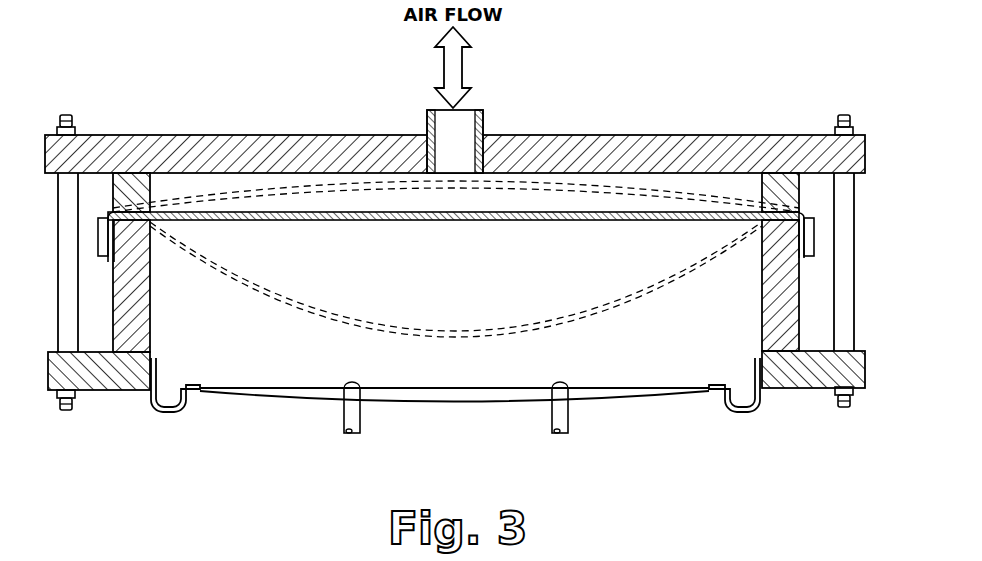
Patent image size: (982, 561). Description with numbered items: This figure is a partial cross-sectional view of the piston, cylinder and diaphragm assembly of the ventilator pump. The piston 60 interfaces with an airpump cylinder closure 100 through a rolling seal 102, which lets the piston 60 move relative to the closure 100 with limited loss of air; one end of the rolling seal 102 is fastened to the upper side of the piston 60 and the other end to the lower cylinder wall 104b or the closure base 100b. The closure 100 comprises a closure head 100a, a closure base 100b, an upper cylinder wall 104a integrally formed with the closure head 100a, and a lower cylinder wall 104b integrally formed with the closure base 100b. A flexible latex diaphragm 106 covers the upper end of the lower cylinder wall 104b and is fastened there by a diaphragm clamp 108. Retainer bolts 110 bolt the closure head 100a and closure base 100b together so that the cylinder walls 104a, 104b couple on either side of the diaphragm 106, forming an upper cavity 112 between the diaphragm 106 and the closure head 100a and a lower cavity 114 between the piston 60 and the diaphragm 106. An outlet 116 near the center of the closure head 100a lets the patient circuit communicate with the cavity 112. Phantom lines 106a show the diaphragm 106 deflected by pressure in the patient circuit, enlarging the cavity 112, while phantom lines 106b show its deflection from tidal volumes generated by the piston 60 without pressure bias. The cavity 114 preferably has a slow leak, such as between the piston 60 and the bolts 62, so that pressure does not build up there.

The airpump cylinder closure 100 is at (462, 242).
The closure head 100a is at (729, 133).
The closure base 100b is at (866, 378).
The rolling seal 102 is at (172, 420).
The upper cylinder wall 104a is at (113, 181).
The lower cylinder wall 104b is at (152, 315).
The diaphragm 106 is at (420, 220).
The phantom lines 106a is at (351, 317).
The phantom lines 106b is at (490, 192).
The diaphragm clamp 108 is at (98, 243).
The retainer bolts 110 is at (66, 114).
The upper cavity 112 is at (192, 199).
The lower cavity 114 is at (272, 359).
The outlet 116 is at (427, 125).
The piston 60 is at (650, 407).
The bolts 62 is at (343, 417).